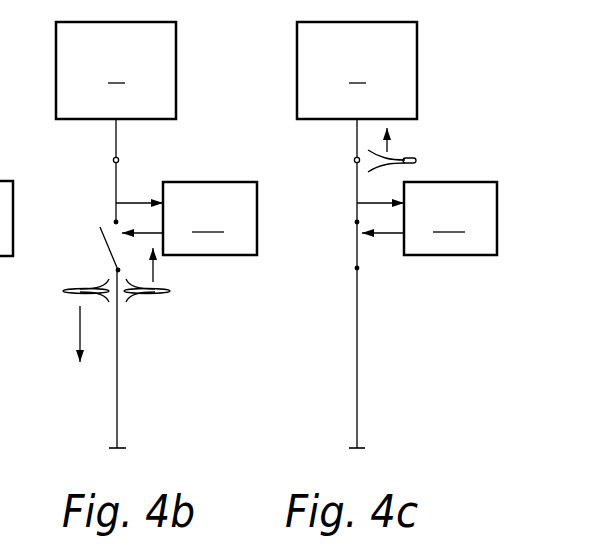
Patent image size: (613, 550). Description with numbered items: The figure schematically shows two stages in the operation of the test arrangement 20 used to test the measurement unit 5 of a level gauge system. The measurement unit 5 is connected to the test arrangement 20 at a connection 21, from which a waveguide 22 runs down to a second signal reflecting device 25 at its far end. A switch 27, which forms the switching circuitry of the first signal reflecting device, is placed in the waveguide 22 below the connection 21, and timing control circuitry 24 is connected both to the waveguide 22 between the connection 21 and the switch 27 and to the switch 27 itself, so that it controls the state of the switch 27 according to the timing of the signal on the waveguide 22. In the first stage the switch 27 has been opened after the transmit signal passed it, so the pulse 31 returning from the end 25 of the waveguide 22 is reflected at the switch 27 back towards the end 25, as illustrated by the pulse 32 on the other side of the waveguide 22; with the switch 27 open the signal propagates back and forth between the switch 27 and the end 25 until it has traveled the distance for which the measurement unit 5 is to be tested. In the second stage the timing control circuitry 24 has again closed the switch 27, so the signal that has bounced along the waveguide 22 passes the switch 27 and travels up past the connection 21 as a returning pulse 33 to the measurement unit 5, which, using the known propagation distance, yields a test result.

In FIG. 4B, the measurement unit 5 is at (116, 70).
In FIG. 4C, the measurement unit 5 is at (357, 70).
In FIG. 4B, the test arrangement 20 is at (181, 372).
In FIG. 4C, the test arrangement 20 is at (437, 370).
In FIG. 4B, the connection 21 is at (119, 160).
In FIG. 4C, the connection 21 is at (355, 160).
In FIG. 4B, the waveguide 22 is at (110, 375).
In FIG. 4C, the waveguide 22 is at (352, 351).
In FIG. 4B, the timing control circuitry 24 is at (186, 218).
In FIG. 4C, the timing control circuitry 24 is at (427, 218).
In FIG. 4B, the second signal reflecting device 25 is at (117, 450).
In FIG. 4C, the second signal reflecting device 25 is at (357, 450).
In FIG. 4B, the switch 27 is at (100, 228).
In FIG. 4C, the switch 27 is at (352, 250).
In FIG. 4B, the pulse 31 is at (163, 294).
In FIG. 4B, the pulse 32 is at (66, 297).
In FIG. 4C, the clamp 33 is at (414, 159).